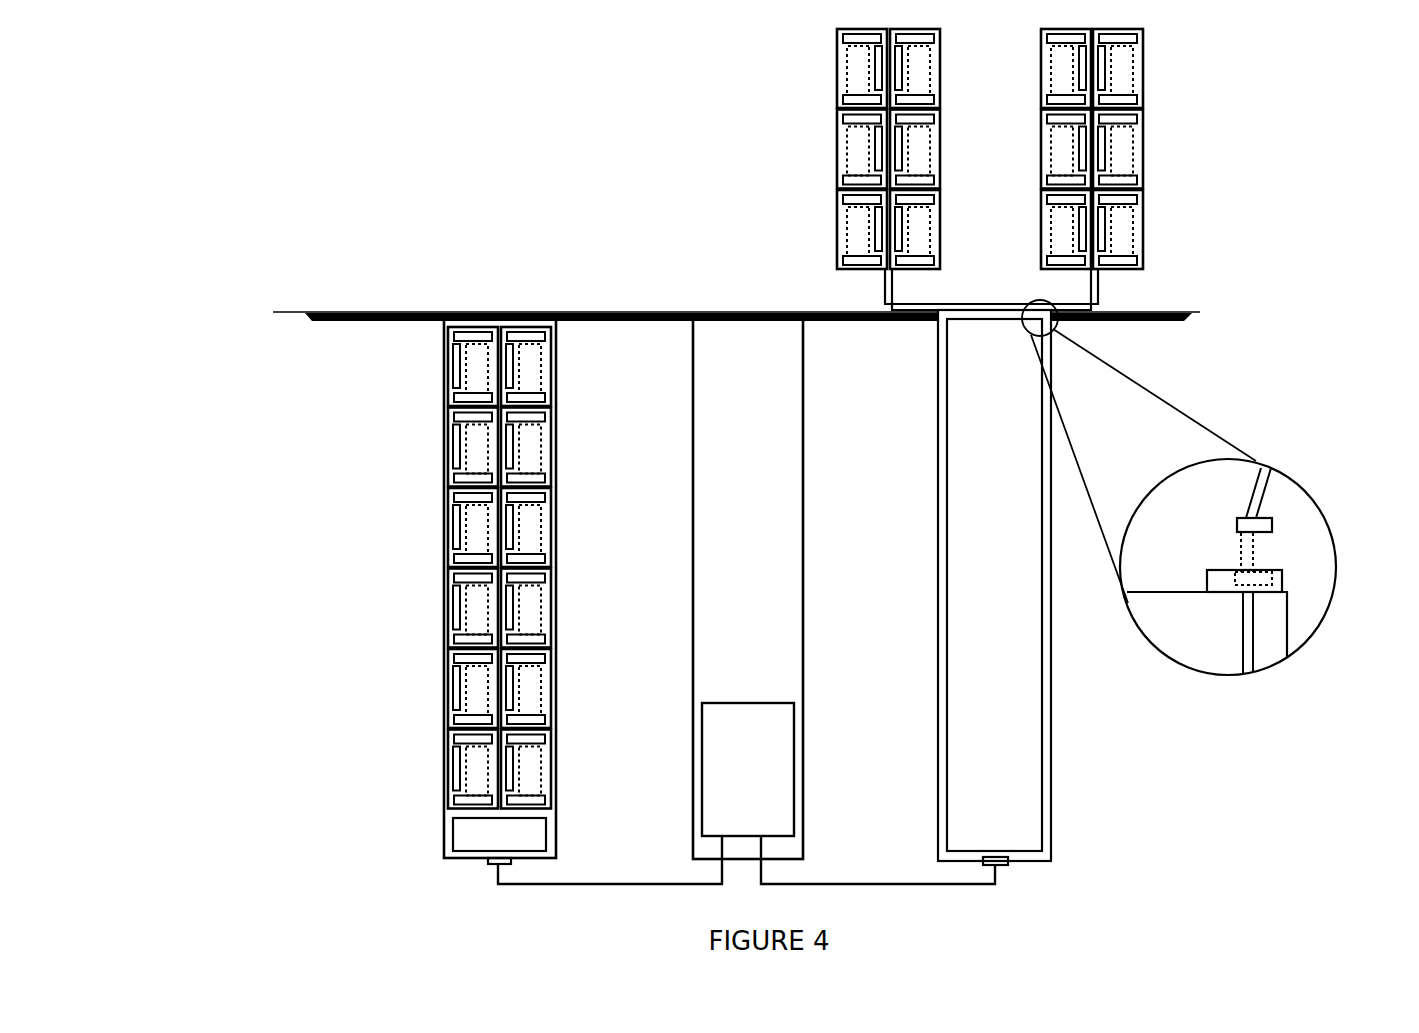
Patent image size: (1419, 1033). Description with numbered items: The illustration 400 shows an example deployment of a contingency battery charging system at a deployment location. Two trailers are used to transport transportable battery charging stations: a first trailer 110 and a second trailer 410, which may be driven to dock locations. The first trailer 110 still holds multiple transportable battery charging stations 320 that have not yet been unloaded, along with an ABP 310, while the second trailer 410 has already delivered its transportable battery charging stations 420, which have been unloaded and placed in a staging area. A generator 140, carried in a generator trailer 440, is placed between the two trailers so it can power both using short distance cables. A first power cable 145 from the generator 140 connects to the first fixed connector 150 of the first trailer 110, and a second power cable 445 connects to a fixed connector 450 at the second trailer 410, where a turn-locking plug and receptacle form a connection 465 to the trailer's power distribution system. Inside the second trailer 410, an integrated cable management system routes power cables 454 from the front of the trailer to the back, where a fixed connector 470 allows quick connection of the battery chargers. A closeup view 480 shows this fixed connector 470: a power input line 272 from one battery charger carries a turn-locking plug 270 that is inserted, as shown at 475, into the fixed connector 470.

The illustration 400 is at (165, 96).
The transportable battery charging stations 420 is at (1152, 31).
The transportable battery charging stations 320 is at (440, 333).
The first trailer 110 is at (449, 588).
The ABP 310 is at (499, 834).
The first fixed connector 150 is at (488, 862).
The generator trailer 440 is at (716, 587).
The generator 140 is at (748, 769).
The first power cable 145 is at (618, 884).
The second power cable 445 is at (870, 884).
The second trailer 410 is at (1064, 585).
The power cables 454 is at (1041, 508).
The fixed connector 450 is at (995, 857).
The connection 465 is at (1003, 872).
The closeup view 480 is at (1209, 487).
The fixed connector 470 is at (1207, 582).
The turn-locking plug 270 is at (1237, 526).
The power input line 272 is at (1256, 474).
The insertion of plug 475 is at (1298, 584).